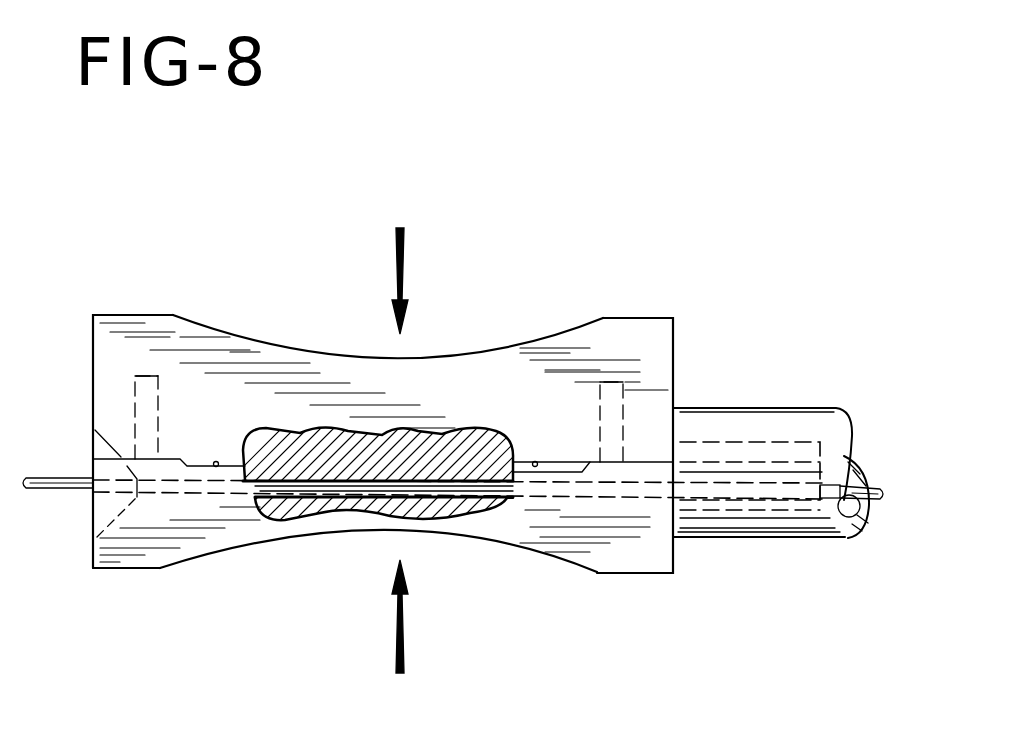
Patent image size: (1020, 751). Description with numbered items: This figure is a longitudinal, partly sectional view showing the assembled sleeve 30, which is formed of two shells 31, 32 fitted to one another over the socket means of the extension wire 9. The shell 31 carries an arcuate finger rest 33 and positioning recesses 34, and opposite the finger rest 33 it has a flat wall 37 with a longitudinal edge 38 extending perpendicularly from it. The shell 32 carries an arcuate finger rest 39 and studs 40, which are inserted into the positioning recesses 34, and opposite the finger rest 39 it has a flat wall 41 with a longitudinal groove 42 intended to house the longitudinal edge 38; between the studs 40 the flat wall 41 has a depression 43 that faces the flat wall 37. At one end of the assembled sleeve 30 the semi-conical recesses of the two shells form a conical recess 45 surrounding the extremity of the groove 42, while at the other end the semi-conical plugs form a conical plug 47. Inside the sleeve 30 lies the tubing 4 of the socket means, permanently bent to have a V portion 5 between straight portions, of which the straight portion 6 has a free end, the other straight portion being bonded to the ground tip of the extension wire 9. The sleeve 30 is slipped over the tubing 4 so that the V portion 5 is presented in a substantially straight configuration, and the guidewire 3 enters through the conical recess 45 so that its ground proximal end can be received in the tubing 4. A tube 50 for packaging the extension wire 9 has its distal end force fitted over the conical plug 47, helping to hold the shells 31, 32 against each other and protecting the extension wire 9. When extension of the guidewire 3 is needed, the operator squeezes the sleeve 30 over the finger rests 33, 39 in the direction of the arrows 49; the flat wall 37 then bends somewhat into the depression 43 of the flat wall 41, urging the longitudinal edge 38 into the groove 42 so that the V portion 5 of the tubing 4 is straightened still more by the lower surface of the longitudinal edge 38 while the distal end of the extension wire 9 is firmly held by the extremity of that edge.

The guidewire 3 is at (42, 492).
The tubing 4 is at (358, 488).
The V portion 5 is at (510, 499).
The straight portion 6 is at (186, 489).
The extension wire 9 is at (868, 487).
The sleeve 30 is at (613, 300).
The shell 31 is at (103, 322).
The shell 32 is at (121, 551).
The arcuate finger rest 33 is at (213, 333).
The positioning recesses 34 is at (133, 380).
The flat wall 37 is at (534, 464).
The longitudinal edge 38 is at (330, 465).
The arcuate finger rest 39 is at (313, 534).
The studs 40 is at (617, 413).
The flat wall 41 is at (649, 464).
The longitudinal groove 42 is at (443, 497).
The depression 43 is at (218, 467).
The conical recess 45 is at (100, 517).
The conical plug 47 is at (147, 400).
The arrows 49 is at (403, 258).
The tube 50 is at (750, 523).